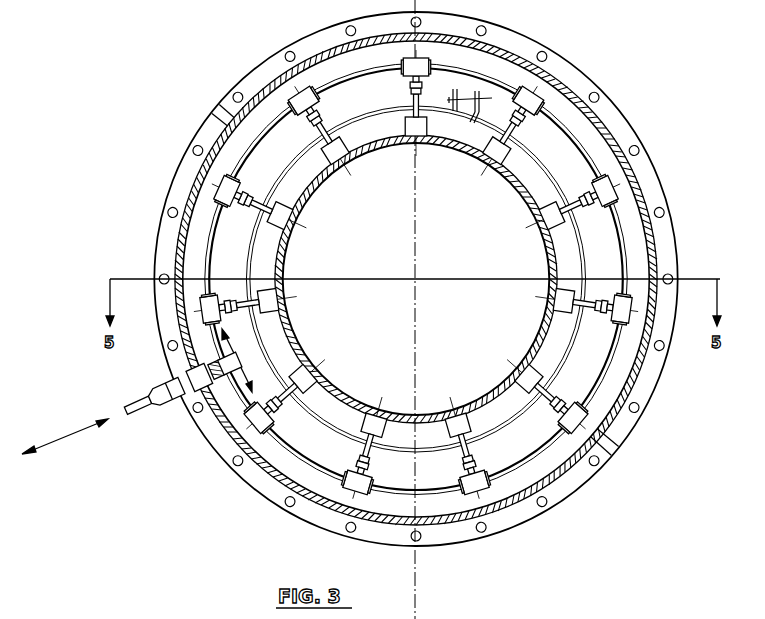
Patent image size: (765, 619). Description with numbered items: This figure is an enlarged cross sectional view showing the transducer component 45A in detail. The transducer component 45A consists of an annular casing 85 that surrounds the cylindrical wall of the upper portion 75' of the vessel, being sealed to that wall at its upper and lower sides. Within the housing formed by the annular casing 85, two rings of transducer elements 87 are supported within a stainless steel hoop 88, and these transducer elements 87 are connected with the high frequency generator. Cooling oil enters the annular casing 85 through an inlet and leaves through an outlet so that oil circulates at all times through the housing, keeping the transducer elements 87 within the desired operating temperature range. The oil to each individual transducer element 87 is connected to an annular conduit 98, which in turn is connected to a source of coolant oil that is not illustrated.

The annular casing 85 is at (621, 118).
The transducer component 45A is at (649, 197).
The transducer elements 87 is at (548, 224).
The stainless steel hoop 88 is at (580, 249).
The inner collar 75' is at (416, 279).
The annular conduit 98 is at (270, 447).